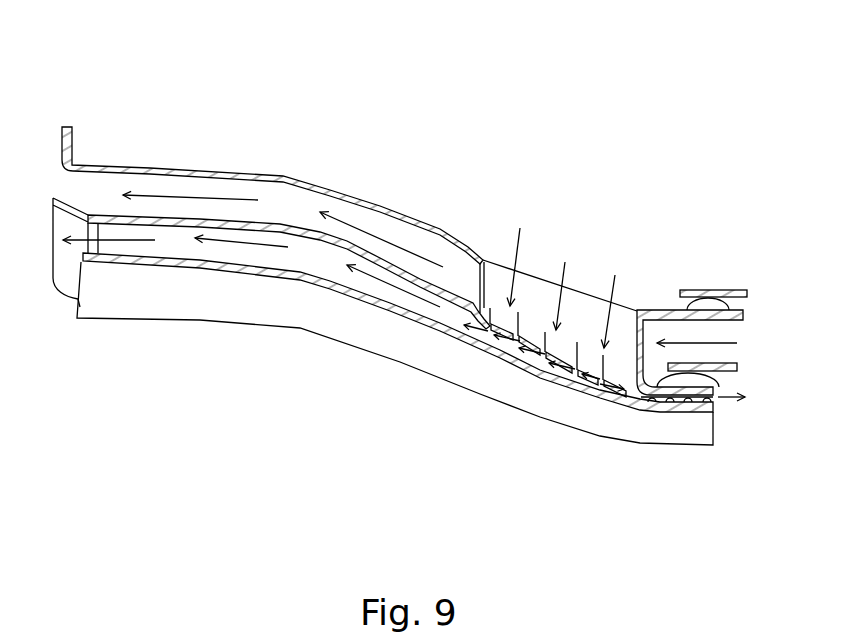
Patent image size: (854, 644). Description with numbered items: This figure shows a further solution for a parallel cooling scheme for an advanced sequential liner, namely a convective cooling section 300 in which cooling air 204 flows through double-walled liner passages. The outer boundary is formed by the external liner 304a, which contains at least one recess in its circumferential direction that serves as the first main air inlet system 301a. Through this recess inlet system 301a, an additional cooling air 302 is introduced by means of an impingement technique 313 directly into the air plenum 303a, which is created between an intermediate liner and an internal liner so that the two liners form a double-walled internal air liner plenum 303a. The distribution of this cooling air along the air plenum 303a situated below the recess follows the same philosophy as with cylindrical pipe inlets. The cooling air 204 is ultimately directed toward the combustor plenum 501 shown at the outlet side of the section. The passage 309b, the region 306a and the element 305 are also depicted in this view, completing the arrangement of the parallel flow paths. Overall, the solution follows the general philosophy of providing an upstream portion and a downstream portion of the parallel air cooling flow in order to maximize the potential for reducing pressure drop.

The convective cooling section 300 is at (509, 112).
The external liner 304a is at (165, 167).
The intermediate wall / cooling passage 309b is at (283, 202).
The cooling air 204 is at (375, 215).
The additional cooling air 302 is at (508, 222).
The first main air inlet system 301a is at (568, 256).
The combustor plenum 501 is at (58, 194).
The air plenum 303a is at (296, 256).
The lower wall / passage 306a is at (388, 285).
The impingement technique 313 is at (504, 345).
The seal 305 is at (717, 400).